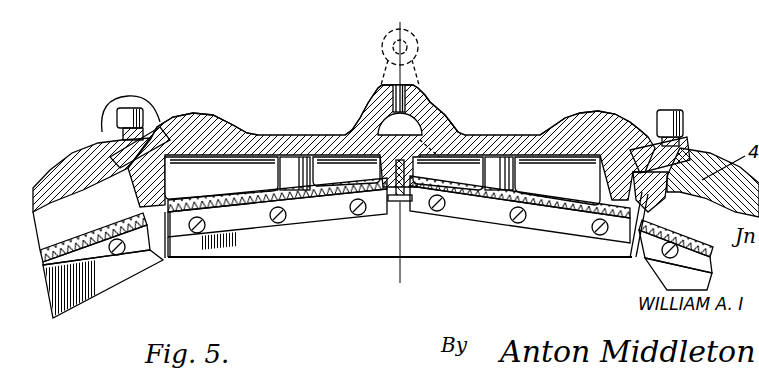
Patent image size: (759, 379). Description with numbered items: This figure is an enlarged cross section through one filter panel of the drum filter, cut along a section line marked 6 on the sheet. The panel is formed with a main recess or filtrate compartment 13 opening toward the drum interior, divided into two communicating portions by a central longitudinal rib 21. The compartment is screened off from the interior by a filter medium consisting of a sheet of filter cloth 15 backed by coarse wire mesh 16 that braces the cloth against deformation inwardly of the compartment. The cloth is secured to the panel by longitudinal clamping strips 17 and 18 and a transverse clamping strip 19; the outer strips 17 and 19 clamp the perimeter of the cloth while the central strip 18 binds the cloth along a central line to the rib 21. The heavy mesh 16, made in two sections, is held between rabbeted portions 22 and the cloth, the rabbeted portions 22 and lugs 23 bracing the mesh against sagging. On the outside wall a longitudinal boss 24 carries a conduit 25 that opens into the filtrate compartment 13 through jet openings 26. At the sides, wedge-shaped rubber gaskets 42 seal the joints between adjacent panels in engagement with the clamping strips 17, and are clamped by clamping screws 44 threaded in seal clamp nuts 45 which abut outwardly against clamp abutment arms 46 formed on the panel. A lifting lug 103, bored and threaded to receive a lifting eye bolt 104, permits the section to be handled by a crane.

The section line 6 is at (398, 152).
The filtrate compartment 13 is at (233, 170).
The filter cloth 15 is at (241, 212).
The coarse wire mesh 16 is at (241, 210).
The longitudinal clamping strip 17 is at (128, 204).
The longitudinal clamping strip 18 is at (390, 190).
The transverse clamping strip 19 is at (100, 257).
The longitudinal rib 21 is at (430, 175).
The rabbeted portion 22 is at (387, 185).
The lug 23 is at (300, 158).
The longitudinal boss 24 is at (423, 100).
The conduit 25 is at (415, 122).
The jet opening 26 is at (447, 134).
The wedge-shaped rubber gasket 42 is at (175, 187).
The clamping screw 44 is at (680, 117).
The seal clamp nut 45 is at (182, 121).
The clamp abutment arm 46 is at (697, 132).
The lifting lug 103 is at (410, 85).
The lifting eye bolt 104 is at (418, 42).